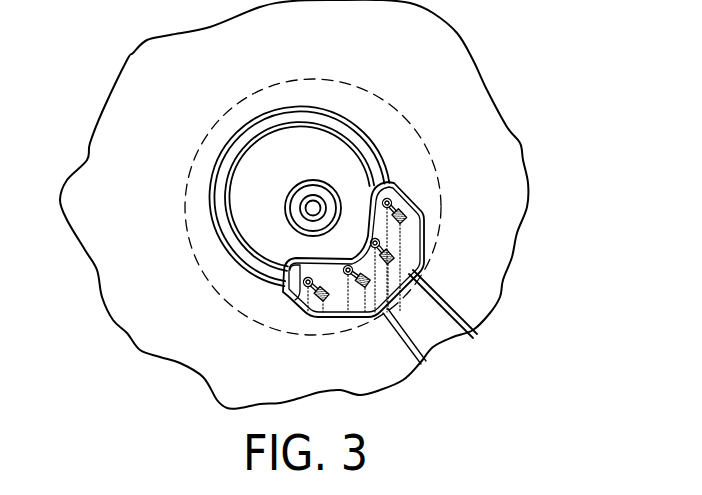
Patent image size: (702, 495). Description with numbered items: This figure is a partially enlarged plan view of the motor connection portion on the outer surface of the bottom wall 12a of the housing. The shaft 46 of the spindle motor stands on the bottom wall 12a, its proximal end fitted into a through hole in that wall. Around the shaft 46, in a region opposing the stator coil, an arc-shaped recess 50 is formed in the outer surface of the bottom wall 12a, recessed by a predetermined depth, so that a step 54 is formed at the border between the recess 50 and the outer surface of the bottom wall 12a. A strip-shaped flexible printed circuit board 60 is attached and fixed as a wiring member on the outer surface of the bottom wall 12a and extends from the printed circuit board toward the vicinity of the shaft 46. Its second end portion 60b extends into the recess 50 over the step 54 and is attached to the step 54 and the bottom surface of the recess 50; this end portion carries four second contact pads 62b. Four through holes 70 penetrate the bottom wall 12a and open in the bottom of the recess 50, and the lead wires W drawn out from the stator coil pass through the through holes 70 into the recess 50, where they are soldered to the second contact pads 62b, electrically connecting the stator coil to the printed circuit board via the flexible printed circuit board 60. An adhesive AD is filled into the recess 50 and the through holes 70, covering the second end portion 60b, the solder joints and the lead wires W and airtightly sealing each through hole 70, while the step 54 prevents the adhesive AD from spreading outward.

The bottom wall 12a is at (458, 62).
The shaft 46 is at (313, 208).
The recess 50 is at (288, 295).
The step portion 54 is at (391, 318).
The flexible printed circuit board 60 is at (456, 309).
The second end portion 60b is at (423, 225).
The second contact pads 62b is at (410, 193).
The through holes 70 is at (348, 268).
The lead wires W is at (401, 212).
The adhesive AD is at (423, 268).